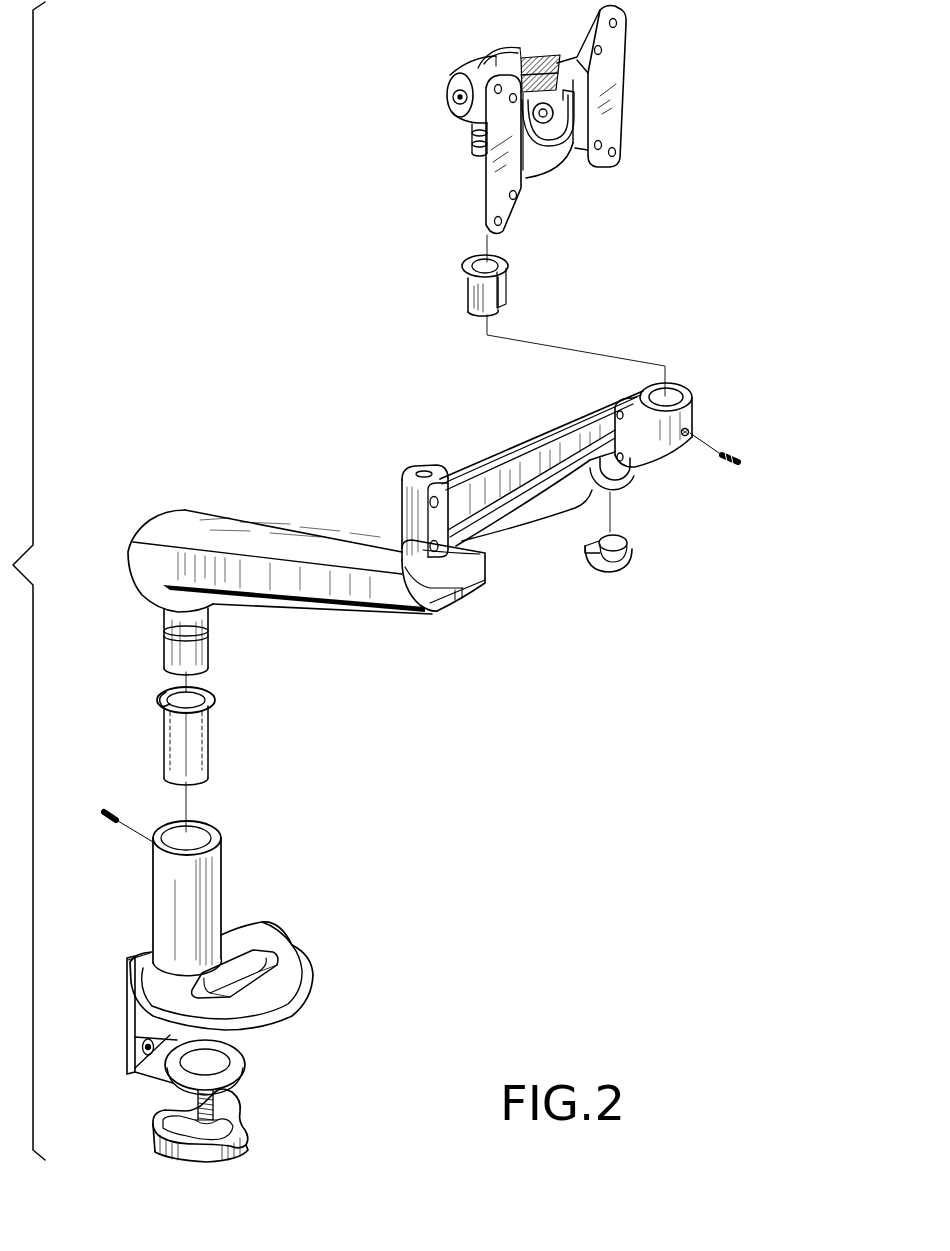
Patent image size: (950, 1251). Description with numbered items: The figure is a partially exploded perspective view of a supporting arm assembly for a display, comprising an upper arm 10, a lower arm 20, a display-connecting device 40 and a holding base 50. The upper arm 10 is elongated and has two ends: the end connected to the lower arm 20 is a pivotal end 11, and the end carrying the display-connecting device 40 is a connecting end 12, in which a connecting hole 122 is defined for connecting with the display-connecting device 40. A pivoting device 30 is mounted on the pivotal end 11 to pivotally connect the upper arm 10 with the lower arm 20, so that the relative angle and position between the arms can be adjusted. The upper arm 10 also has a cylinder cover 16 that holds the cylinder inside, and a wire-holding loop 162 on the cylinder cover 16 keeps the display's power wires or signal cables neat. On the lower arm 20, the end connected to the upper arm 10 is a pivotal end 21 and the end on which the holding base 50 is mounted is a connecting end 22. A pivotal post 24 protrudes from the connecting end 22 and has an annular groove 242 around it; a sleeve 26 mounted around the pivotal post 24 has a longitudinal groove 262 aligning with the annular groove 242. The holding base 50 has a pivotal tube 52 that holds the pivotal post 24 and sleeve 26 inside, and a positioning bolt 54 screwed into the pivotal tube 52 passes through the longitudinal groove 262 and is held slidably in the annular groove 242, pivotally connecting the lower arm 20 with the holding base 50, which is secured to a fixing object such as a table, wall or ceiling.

The upper arm 10 is at (576, 484).
The pivotal end 11 is at (462, 493).
The connecting end 12 is at (685, 434).
The connecting hole 122 is at (668, 398).
The cylinder cover 16 is at (495, 537).
The wire-holding loop 162 is at (607, 568).
The lower arm 20 is at (278, 558).
The pivotal end 21 is at (425, 588).
The connecting end 22 is at (160, 562).
The pivotal post 24 is at (185, 641).
The annular groove 242 is at (172, 632).
The sleeve 26 is at (185, 730).
The longitudinal groove 262 is at (168, 698).
The pivoting device 30 is at (385, 486).
The display-connecting device 40 is at (430, 151).
The holding base 50 is at (219, 987).
The pivotal tube 52 is at (222, 887).
The positioning bolt 54 is at (106, 822).